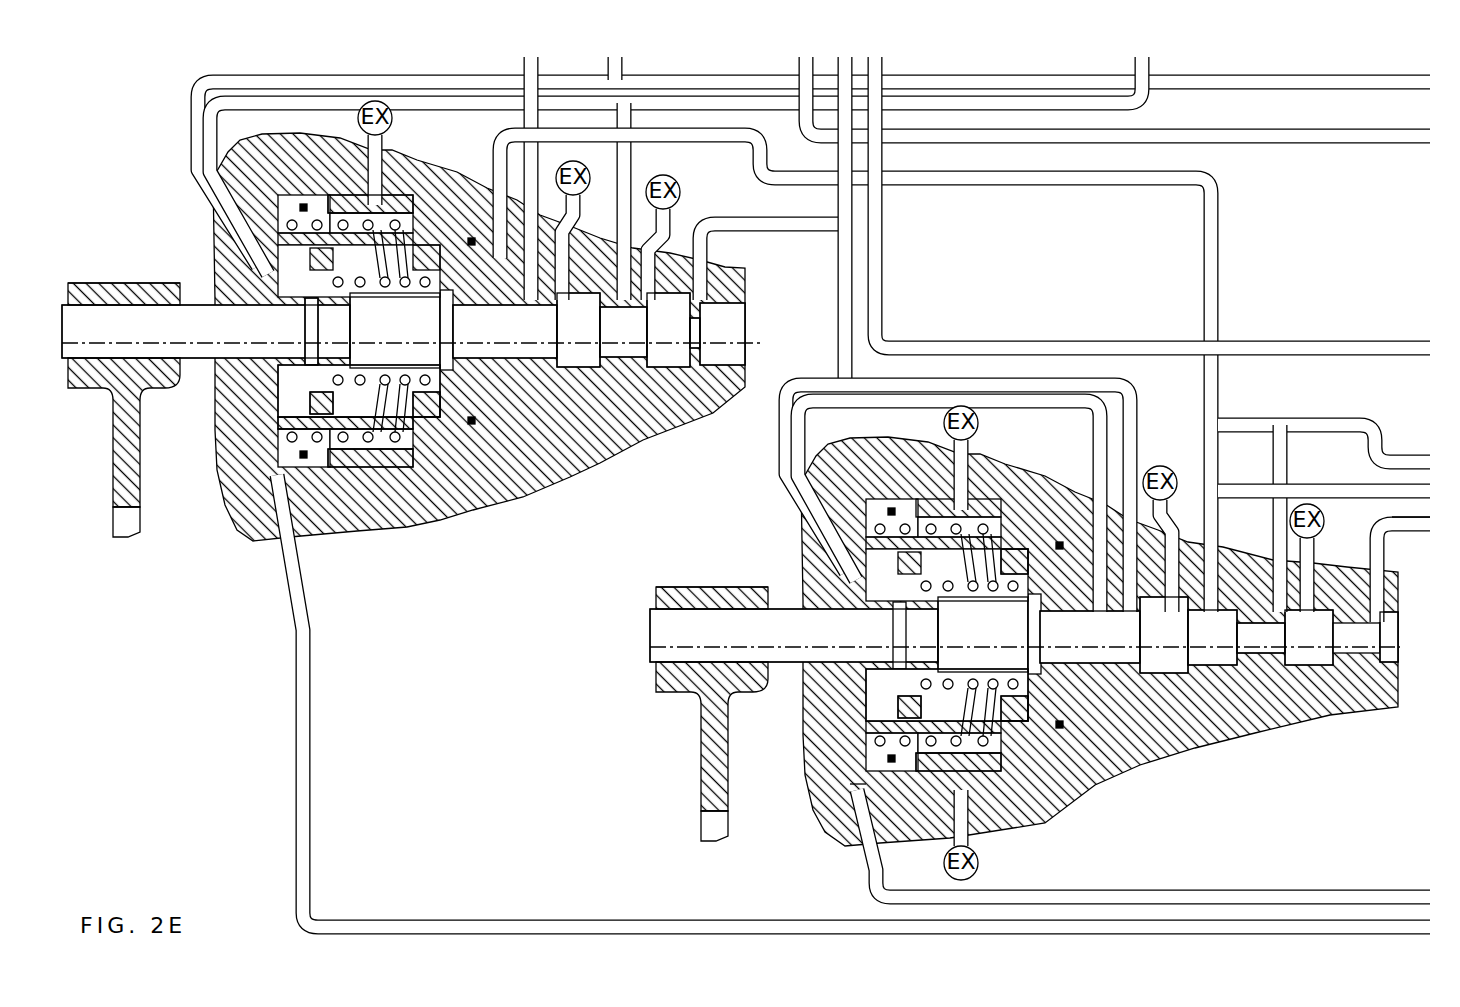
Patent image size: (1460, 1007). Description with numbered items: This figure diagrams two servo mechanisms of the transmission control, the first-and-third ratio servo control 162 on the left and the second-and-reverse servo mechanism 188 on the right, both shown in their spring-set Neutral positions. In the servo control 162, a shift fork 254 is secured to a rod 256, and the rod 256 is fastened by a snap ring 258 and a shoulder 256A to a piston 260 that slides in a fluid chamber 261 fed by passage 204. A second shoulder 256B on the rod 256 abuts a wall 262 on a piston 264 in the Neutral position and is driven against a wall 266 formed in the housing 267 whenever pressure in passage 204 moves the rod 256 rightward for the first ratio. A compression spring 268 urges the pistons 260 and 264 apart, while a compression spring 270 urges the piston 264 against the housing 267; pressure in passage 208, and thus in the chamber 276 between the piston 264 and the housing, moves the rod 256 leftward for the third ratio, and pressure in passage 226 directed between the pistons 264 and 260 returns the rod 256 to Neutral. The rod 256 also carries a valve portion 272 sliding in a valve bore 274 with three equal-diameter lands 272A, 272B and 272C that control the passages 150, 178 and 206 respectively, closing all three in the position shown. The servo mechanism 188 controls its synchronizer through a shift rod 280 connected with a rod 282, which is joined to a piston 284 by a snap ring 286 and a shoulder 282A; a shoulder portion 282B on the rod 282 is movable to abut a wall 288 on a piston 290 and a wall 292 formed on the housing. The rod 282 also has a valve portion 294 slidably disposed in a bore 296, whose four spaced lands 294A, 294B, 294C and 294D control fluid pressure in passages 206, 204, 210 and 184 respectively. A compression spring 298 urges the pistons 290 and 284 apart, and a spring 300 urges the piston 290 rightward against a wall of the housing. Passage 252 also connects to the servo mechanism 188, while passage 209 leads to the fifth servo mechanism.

The passage 150 is at (540, 105).
The 1/3 servo control mechanism 162 is at (603, 468).
The passage 178 is at (1140, 93).
The passage 184 is at (1408, 532).
The 2/R servo mechanism 188 is at (1376, 722).
The passage 204 is at (210, 118).
The passage 206 is at (840, 340).
The passage 208 is at (798, 63).
The passage 209 is at (878, 248).
The passage 210 is at (1325, 463).
The passage 226 is at (305, 688).
The passage 252 is at (1315, 893).
The shift fork 254 is at (130, 517).
The rod 256 is at (108, 320).
The shoulder 256A is at (360, 328).
The shoulder 256B is at (498, 425).
The snap ring 258 is at (292, 378).
The piston 260 is at (288, 273).
The fluid chamber 261 is at (300, 425).
The wall 262 is at (455, 427).
The piston 264 is at (377, 463).
The wall 266 is at (543, 400).
The housing 267 is at (667, 407).
The compression spring 268 is at (400, 443).
The compression spring 270 is at (322, 205).
The valve portion 272 is at (703, 405).
The valve land 272A is at (575, 462).
The valve land 272B is at (648, 407).
The valve land 272C is at (724, 323).
The valve bore 274 is at (705, 300).
The chamber 276 is at (467, 277).
The shift rod 280 is at (710, 760).
The rod 282 is at (713, 597).
The shoulder 282A is at (948, 632).
The shoulder portion 282B is at (1050, 795).
The piston 284 is at (850, 578).
The snap ring 286 is at (875, 690).
The wall 288 is at (1033, 535).
The piston 290 is at (1020, 790).
The wall 292 is at (1090, 652).
The valve portion 294 is at (1255, 658).
The valve land 294A is at (1098, 652).
The valve land 294B is at (1217, 650).
The valve land 294C is at (1318, 650).
The valve land 294D is at (1397, 632).
The bore 296 is at (1354, 562).
The compression spring 298 is at (933, 785).
The spring 300 is at (860, 750).